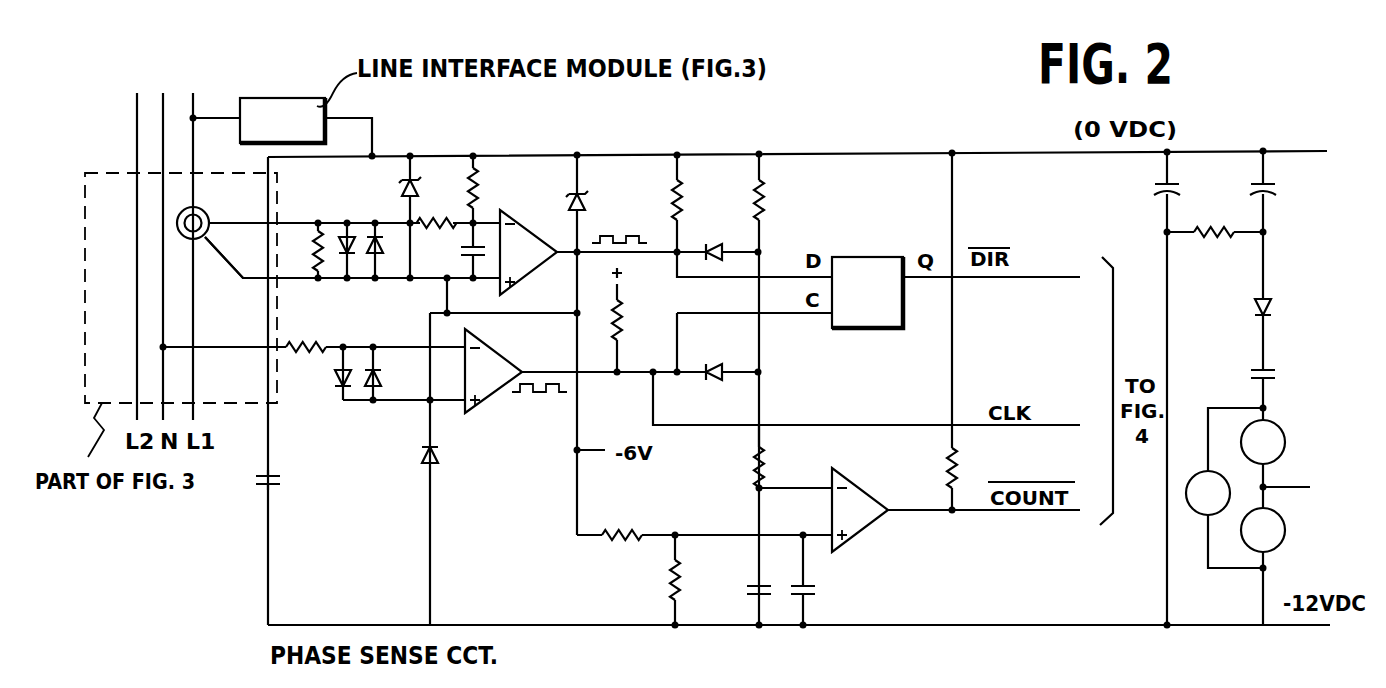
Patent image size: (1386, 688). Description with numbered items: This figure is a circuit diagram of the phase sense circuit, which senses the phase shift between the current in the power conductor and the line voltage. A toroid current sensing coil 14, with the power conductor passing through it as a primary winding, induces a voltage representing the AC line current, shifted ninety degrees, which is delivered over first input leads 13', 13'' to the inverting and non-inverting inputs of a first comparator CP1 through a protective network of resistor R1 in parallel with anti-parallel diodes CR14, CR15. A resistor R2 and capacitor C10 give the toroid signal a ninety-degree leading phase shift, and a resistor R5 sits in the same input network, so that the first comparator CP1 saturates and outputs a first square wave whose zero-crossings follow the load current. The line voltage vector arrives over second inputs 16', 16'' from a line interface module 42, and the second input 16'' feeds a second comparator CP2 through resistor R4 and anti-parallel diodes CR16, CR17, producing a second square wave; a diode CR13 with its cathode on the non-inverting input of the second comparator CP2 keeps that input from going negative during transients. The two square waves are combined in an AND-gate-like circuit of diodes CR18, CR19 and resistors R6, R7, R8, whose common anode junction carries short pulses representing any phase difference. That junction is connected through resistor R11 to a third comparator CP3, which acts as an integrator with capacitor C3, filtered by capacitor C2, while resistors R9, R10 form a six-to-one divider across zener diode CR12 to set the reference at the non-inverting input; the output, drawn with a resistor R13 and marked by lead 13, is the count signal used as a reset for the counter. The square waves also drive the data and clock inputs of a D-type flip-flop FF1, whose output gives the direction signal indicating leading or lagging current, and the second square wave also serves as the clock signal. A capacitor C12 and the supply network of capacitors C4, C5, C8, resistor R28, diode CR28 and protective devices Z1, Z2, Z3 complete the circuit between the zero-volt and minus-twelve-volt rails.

The line interface module 42 is at (298, 139).
The second input 16' is at (407, 123).
The second input 16'' is at (224, 367).
The toroid current sensing coil 14 is at (207, 215).
The first input 13' is at (250, 205).
The first input 13'' is at (247, 274).
The count output line 13 is at (920, 495).
The resistor R1 is at (305, 250).
The resistor R2 is at (437, 239).
The resistor R4 is at (306, 335).
The resistor R5 is at (492, 189).
The resistor R6 is at (695, 203).
The resistor R7 is at (634, 320).
The resistor R8 is at (777, 389).
The resistor R9 is at (622, 520).
The resistor R10 is at (701, 580).
The resistor R11 is at (784, 456).
The resistor R13 is at (979, 331).
The resistor R28 is at (1215, 252).
The zener diode CR12 is at (427, 217).
The diode CR13 is at (461, 458).
The protective anti-parallel diode CR14 is at (347, 228).
The protective anti-parallel diode CR15 is at (382, 255).
The protective anti-parallel diode CR16 is at (335, 382).
The protective anti-parallel diode CR17 is at (381, 380).
The diode CR18 is at (717, 241).
The diode CR19 is at (717, 358).
The diode CR28 is at (1296, 333).
The capacitor C2 is at (814, 580).
The capacitor C3 is at (770, 575).
The capacitor C4 is at (1182, 388).
The capacitor C5 is at (1278, 225).
The capacitor C8 is at (1284, 390).
The capacitor C10 is at (460, 251).
The capacitor C12 is at (295, 482).
The first comparator CP1 is at (527, 228).
The second comparator CP2 is at (497, 360).
The third comparator CP3 is at (866, 496).
The D-type flip-flop FF1 is at (867, 292).
The protective device Z1 is at (1263, 442).
The protective device Z2 is at (1275, 544).
The zener Z3 is at (1224, 488).